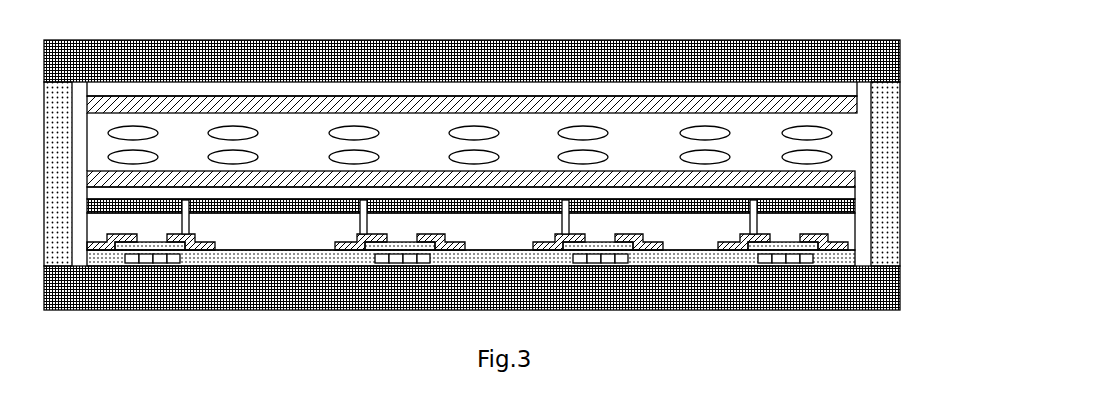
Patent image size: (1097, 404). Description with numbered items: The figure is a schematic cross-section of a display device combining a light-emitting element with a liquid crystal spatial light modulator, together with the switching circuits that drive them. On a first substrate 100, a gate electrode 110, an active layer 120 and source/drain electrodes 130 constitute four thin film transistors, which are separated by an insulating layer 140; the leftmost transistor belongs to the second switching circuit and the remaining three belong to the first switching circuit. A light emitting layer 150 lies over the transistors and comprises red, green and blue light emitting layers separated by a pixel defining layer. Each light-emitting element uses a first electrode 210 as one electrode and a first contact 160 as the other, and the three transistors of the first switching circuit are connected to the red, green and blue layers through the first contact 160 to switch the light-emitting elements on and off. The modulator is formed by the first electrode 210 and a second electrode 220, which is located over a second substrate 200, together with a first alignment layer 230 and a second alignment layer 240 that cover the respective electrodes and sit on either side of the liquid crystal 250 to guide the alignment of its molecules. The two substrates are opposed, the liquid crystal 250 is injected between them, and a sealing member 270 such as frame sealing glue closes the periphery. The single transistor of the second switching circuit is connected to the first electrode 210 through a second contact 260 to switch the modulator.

The first substrate 100 is at (900, 307).
The gate electrode 110 is at (812, 257).
The active layer 120 is at (855, 260).
The source/drain electrodes 130 is at (853, 247).
The insulating layer 140 is at (855, 222).
The light emitting layer 150 is at (855, 207).
The first contact 160 is at (562, 228).
The second substrate 200 is at (898, 62).
The first electrode 210 is at (855, 193).
The second electrode 220 is at (873, 87).
The first alignment layer 230 is at (855, 175).
The second alignment layer 240 is at (857, 101).
The liquid crystal 250 is at (828, 135).
The second contact 260 is at (192, 228).
The sealing member 270 is at (885, 150).